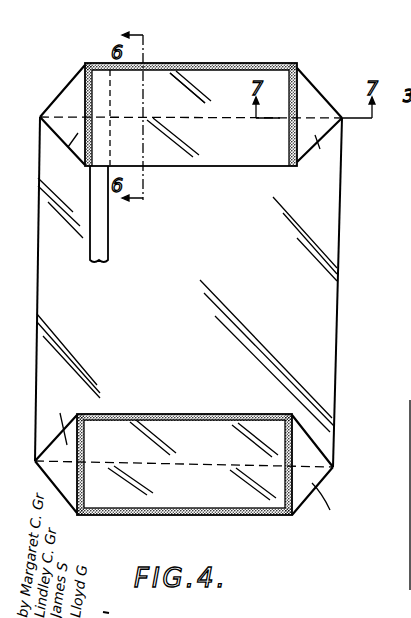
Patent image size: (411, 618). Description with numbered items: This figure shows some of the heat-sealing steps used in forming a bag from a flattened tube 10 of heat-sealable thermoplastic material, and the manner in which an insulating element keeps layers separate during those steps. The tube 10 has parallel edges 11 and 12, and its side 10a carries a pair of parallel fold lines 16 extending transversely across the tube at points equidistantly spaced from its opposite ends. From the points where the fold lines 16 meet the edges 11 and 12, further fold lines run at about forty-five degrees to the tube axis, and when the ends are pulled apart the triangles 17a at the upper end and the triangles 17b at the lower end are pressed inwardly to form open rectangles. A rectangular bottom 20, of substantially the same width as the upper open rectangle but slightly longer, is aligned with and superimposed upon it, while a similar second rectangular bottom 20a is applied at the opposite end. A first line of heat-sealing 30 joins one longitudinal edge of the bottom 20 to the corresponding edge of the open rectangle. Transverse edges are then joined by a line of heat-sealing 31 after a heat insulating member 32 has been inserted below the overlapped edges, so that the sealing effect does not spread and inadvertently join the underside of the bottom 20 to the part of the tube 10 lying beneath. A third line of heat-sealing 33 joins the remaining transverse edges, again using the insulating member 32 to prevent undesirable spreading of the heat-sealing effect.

The flattened tube 10 is at (408, 368).
The side of the tube 10a is at (178, 348).
The edge of the tube 11 is at (37, 296).
The edge of the tube 12 is at (337, 327).
The fold lines 16 is at (172, 112).
The triangles of material 17a is at (350, 148).
The triangles of material 17b is at (196, 466).
The rectangular bottom 20 is at (248, 150).
The second rectangular bottom 20a is at (222, 455).
The first line of heat-sealing 30 is at (211, 62).
The line of heat-sealing 31 is at (86, 65).
The heat insulating member 32 is at (110, 246).
The third line of heat-sealing 33 is at (298, 69).